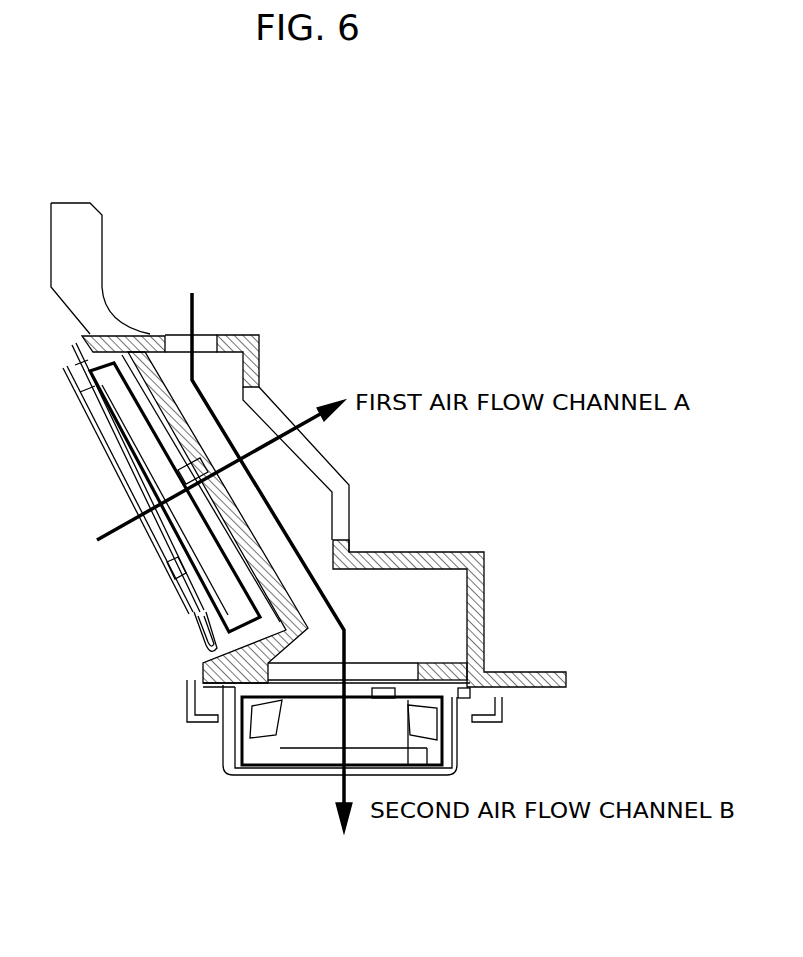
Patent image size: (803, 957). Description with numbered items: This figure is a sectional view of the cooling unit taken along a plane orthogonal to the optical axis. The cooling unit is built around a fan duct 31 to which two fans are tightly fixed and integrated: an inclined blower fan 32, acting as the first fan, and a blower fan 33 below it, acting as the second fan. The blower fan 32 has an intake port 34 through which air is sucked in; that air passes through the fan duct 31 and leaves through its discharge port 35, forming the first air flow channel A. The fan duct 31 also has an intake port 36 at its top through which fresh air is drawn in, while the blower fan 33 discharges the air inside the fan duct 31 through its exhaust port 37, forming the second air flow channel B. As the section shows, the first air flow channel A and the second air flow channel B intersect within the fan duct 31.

The fan duct 31 is at (458, 552).
The blower fan 32 is at (157, 462).
The blower fan 33 is at (320, 730).
The intake port 34 is at (160, 545).
The discharge port 35 is at (262, 412).
The intake port 36 is at (204, 338).
The exhaust port 37 is at (261, 768).